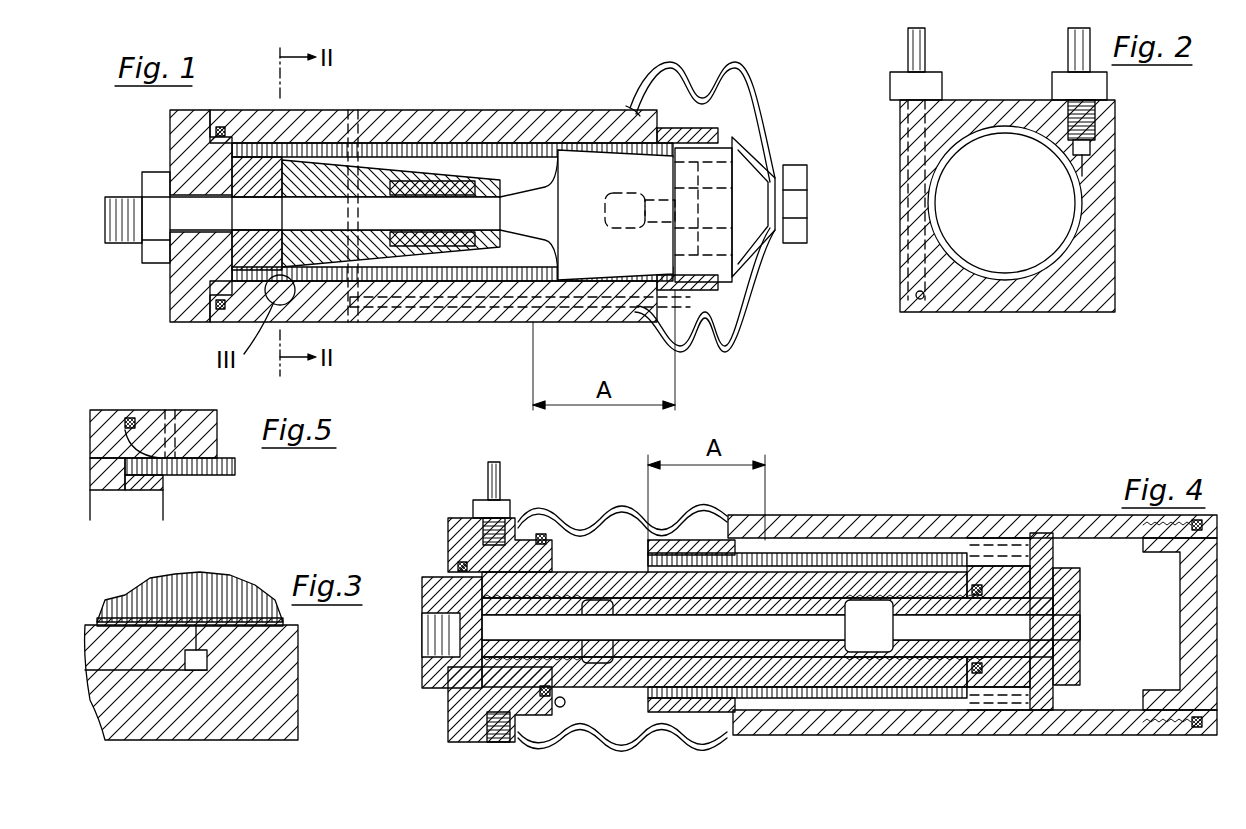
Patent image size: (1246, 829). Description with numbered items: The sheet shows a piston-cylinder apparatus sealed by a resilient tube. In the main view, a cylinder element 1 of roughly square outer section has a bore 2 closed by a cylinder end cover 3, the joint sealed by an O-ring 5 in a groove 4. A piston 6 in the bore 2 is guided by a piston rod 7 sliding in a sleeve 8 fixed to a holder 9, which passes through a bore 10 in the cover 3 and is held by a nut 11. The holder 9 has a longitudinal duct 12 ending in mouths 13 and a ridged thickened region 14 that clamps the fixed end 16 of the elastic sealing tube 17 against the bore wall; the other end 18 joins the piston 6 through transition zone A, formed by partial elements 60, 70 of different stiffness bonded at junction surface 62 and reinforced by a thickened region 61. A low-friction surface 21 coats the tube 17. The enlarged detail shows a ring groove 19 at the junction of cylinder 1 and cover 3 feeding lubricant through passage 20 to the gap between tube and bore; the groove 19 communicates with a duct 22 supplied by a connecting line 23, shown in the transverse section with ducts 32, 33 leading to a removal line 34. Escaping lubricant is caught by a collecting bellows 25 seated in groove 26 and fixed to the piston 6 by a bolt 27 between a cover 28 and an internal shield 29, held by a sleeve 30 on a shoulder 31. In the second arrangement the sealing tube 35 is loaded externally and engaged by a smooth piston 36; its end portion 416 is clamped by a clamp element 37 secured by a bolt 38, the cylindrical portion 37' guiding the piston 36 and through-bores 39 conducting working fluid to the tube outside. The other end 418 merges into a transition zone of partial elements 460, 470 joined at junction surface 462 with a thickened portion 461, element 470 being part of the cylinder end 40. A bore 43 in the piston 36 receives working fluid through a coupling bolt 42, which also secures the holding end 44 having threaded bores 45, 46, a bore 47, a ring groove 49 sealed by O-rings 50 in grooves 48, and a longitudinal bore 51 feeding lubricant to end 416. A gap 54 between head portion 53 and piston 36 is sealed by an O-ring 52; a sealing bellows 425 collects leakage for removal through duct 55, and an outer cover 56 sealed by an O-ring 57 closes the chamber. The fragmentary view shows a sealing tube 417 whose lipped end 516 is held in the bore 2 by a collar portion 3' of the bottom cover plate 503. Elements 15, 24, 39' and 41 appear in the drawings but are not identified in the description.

In FIG. 1, the cylinder element 1 is at (418, 116).
In FIG. 2, the cylinder element 1 is at (1106, 250).
In FIG. 5, the cylinder element 1 is at (210, 424).
In FIG. 3, the cylinder element 1 is at (232, 726).
In FIG. 4, the cylinder element 1 is at (972, 625).
In FIG. 2, the bore 2 is at (1002, 265).
In FIG. 3, the bore 2 is at (122, 566).
In FIG. 4, the bore 2 is at (1106, 540).
In FIG. 1, the cylinder end cover 3 is at (188, 212).
In FIG. 3, the cylinder end cover 3 is at (140, 670).
In FIG. 5, the collar portion 3' is at (144, 501).
In FIG. 1, the groove 4 is at (221, 127).
In FIG. 5, the groove 4 is at (132, 418).
In FIG. 1, the O-ring 5 is at (236, 132).
In FIG. 5, the O-ring 5 is at (126, 420).
In FIG. 1, the piston 6 is at (690, 274).
In FIG. 1, the piston rod 7 is at (476, 188).
In FIG. 1, the sleeve 8 is at (422, 250).
In FIG. 1, the holder 9 is at (382, 248).
In FIG. 1, the bore 10 is at (238, 176).
In FIG. 1, the nut 11 is at (146, 186).
In FIG. 1, the longitudinal duct 12 is at (198, 224).
In FIG. 1, the mouths 13 is at (300, 244).
In FIG. 1, the thickened region 14 is at (245, 165).
In FIG. 1, the seal 15 is at (262, 290).
In FIG. 1, the fixed end 16 is at (278, 285).
In FIG. 1, the elastic sealing tube 17 is at (446, 252).
In FIG. 3, the elastic sealing tube 17 is at (196, 580).
In FIG. 1, the other end 18 is at (508, 282).
In FIG. 3, the ring groove 19 is at (196, 664).
In FIG. 3, the passage 20 is at (205, 626).
In FIG. 3, the low-friction surface 21 is at (130, 620).
In FIG. 2, the duct 22 is at (1084, 172).
In FIG. 5, the duct 22 is at (172, 420).
In FIG. 2, the connecting line 23 is at (1068, 42).
In FIG. 4, the connecting line 23 is at (488, 470).
In FIG. 2, the nut 24 is at (1107, 86).
In FIG. 1, the collecting bellows 25 is at (736, 104).
In FIG. 1, the groove 26 is at (630, 116).
In FIG. 1, the bolt 27 is at (796, 166).
In FIG. 1, the cover 28 is at (760, 250).
In FIG. 1, the internal shield 29 is at (712, 262).
In FIG. 1, the sleeve 30 is at (742, 300).
In FIG. 1, the shoulder 31 is at (702, 348).
In FIG. 1, the duct 32 is at (566, 308).
In FIG. 2, the duct 32 is at (920, 300).
In FIG. 1, the duct 33 is at (354, 112).
In FIG. 2, the duct 33 is at (904, 118).
In FIG. 2, the removal line 34 is at (920, 60).
In FIG. 4, the sealing tube 35 is at (850, 690).
In FIG. 4, the smooth piston 36 is at (600, 738).
In FIG. 4, the clamp element 37 is at (1077, 735).
In FIG. 4, the cylindrical portion 37' is at (1055, 738).
In FIG. 4, the bolt 38 is at (958, 660).
In FIG. 4, the through-bores 39 is at (1035, 590).
In FIG. 4, the piston seal 39' is at (998, 523).
In FIG. 4, the cylinder end 40 is at (662, 700).
In FIG. 4, the tube 41 is at (806, 690).
In FIG. 4, the coupling bolt 42 is at (430, 660).
In FIG. 4, the bore 43 is at (770, 640).
In FIG. 4, the holding end 44 is at (458, 712).
In FIG. 4, the threaded bore 45 is at (462, 562).
In FIG. 4, the threaded bore 46 is at (498, 744).
In FIG. 4, the bore 47 is at (542, 532).
In FIG. 4, the grooves 48 is at (548, 698).
In FIG. 4, the ring groove 49 is at (450, 524).
In FIG. 4, the O-rings 50 is at (452, 556).
In FIG. 4, the longitudinal bore 51 is at (650, 560).
In FIG. 4, the O-ring 52 is at (976, 586).
In FIG. 4, the head portion 53 is at (1012, 575).
In FIG. 4, the ring groove 54 is at (968, 572).
In FIG. 4, the duct 55 is at (558, 708).
In FIG. 4, the outer cover 56 is at (1190, 607).
In FIG. 4, the O-ring 57 is at (1195, 730).
In FIG. 1, the partial element 60 is at (664, 284).
In FIG. 1, the thickened region 61 is at (548, 162).
In FIG. 1, the junction surface 62 is at (640, 290).
In FIG. 1, the partial element 70 is at (596, 166).
In FIG. 4, the end portion 416 is at (1008, 690).
In FIG. 5, the sealing tube 417 is at (200, 478).
In FIG. 4, the other end 418 is at (792, 556).
In FIG. 4, the sealing bellows 425 is at (596, 518).
In FIG. 4, the partial element 460 is at (730, 716).
In FIG. 4, the thickened portion 461 is at (728, 542).
In FIG. 4, the junction surface 462 is at (690, 712).
In FIG. 4, the partial element 470 is at (700, 712).
In FIG. 5, the bottom cover plate 503 is at (100, 430).
In FIG. 5, the end portion 516 is at (125, 465).